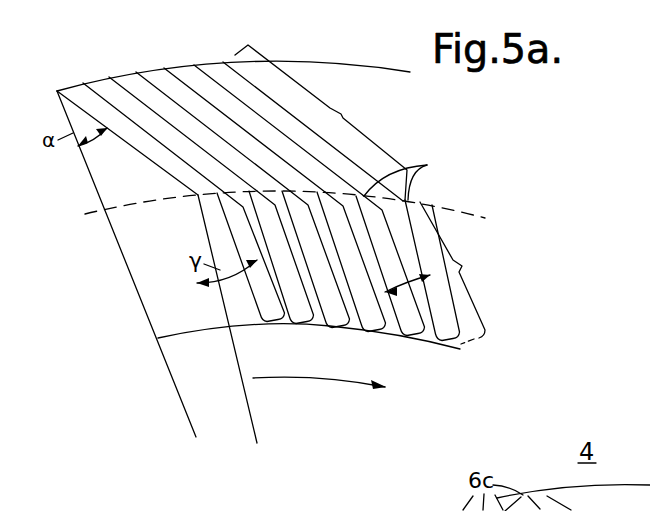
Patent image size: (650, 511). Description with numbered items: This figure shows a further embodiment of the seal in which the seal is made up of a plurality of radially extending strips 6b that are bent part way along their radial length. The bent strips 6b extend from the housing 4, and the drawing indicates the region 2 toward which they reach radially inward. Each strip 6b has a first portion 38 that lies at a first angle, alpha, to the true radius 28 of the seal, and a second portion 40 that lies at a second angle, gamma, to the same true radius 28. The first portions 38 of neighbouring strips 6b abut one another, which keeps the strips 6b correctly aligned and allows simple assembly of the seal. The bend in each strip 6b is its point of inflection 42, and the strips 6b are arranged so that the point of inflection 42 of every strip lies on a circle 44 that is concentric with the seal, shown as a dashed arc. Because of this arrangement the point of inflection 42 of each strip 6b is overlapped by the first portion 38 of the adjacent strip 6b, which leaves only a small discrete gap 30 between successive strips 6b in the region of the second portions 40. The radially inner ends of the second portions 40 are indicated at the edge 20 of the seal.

The rotating element / shaft 2 is at (378, 432).
The housing 4 is at (346, 30).
The radially extending strips 6b is at (192, 85).
The end edge 20 is at (446, 332).
The true radius 28 is at (138, 296).
The discrete gap 30 is at (412, 283).
The first portion 38 is at (321, 122).
The second portion 40 is at (457, 273).
The point of inflection 42 is at (427, 165).
The concentric circle 44 is at (450, 205).